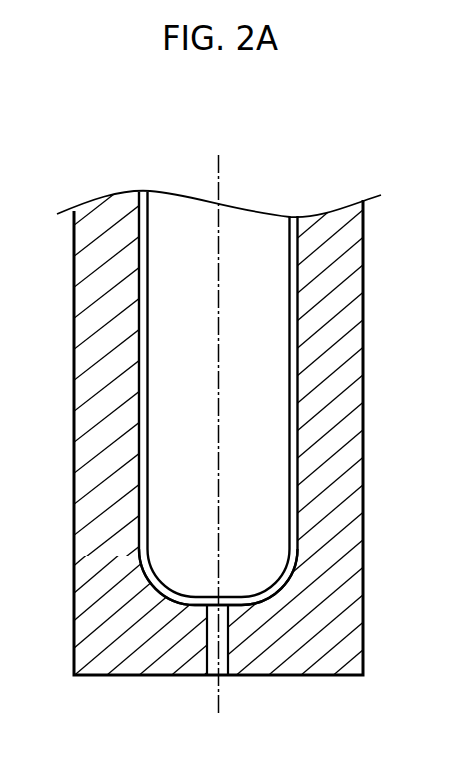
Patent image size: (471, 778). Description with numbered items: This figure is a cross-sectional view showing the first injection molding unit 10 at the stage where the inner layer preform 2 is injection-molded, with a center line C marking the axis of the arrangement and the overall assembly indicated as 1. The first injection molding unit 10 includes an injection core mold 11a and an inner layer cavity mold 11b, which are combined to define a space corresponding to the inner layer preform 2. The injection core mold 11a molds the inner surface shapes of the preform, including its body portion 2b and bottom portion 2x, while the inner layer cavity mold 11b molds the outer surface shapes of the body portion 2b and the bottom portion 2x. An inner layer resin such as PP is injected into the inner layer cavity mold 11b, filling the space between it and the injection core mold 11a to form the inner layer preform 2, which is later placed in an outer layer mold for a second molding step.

The crucible 1 is at (312, 186).
The first injection molding unit 10 is at (410, 187).
The inner layer preform 2 is at (300, 297).
The body portion 2b is at (297, 385).
The bottom portion 2x is at (260, 605).
The injection core mold 11a is at (258, 513).
The inner layer cavity mold 11b is at (348, 354).
The central axis C is at (218, 176).